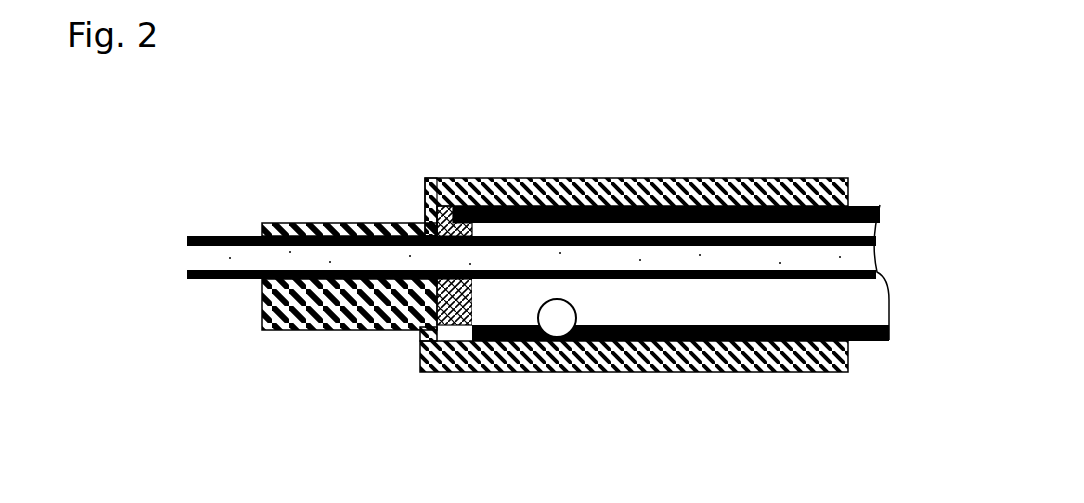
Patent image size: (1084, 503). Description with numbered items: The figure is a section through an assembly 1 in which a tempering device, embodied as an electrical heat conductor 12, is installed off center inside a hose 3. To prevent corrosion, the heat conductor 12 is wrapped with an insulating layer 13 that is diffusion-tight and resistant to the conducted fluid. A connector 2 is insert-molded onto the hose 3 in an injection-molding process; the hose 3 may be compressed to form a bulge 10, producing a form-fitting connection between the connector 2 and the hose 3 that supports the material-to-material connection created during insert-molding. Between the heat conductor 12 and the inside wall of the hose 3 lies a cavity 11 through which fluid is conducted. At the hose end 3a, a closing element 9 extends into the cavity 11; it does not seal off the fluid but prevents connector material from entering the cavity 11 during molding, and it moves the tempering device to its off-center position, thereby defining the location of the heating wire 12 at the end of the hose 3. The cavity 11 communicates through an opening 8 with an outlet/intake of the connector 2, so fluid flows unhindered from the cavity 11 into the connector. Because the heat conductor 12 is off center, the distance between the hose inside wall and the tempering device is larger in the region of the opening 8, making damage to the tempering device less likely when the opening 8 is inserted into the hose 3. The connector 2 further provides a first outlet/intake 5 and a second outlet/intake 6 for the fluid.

The assembly 1 is at (574, 392).
The connector 2 is at (362, 223).
The hose 3 is at (874, 207).
The hose end 3a is at (463, 178).
The first outlet/intake 5 is at (872, 354).
The second outlet/intake 6 is at (236, 230).
The opening 8 is at (556, 313).
The closing element 9 is at (422, 370).
The bulge 10 is at (712, 370).
The cavity 11 is at (869, 307).
The electrical heat conductor 12 is at (232, 262).
The insulating layer 13 is at (192, 277).